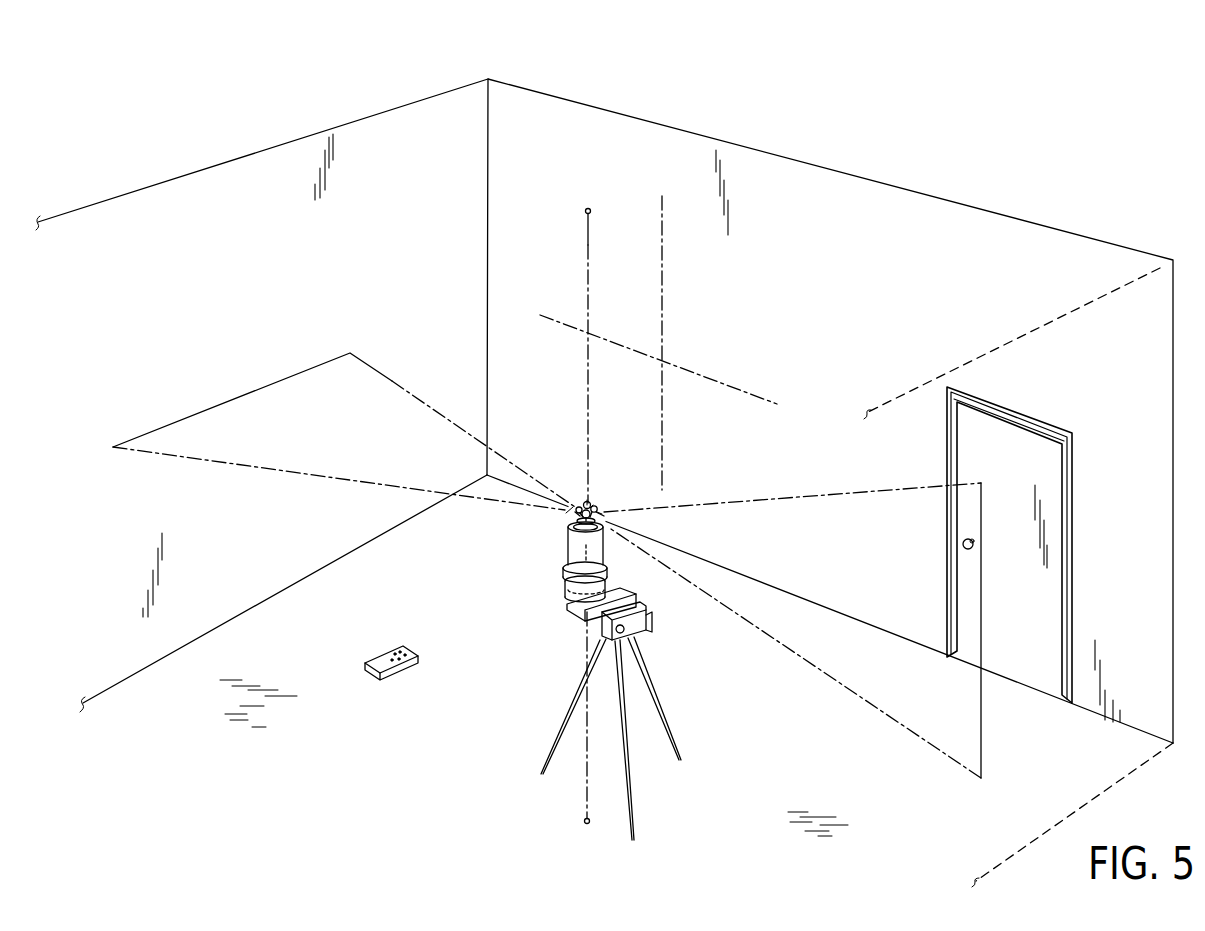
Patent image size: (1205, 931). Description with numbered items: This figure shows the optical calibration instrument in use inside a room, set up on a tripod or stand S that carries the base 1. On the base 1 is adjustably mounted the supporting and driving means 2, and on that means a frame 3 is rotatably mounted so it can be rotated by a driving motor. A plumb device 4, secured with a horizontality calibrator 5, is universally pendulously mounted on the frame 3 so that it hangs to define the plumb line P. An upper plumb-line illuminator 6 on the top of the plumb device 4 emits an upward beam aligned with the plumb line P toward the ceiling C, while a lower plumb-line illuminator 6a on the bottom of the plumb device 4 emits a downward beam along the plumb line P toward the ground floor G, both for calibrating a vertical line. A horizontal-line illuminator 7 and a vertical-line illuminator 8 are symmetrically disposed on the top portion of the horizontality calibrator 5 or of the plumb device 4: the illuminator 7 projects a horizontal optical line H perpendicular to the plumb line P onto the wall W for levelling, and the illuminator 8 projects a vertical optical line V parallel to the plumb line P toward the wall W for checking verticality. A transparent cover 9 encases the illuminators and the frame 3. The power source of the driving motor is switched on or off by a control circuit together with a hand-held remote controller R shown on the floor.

The base 1 is at (539, 553).
The supporting and driving means 2 is at (603, 592).
The frame 3 is at (568, 553).
The plumb device 4 is at (594, 562).
The horizontality calibrator 5 is at (570, 512).
The upper plumb-line illuminator 6 is at (587, 505).
The lower plumb-line illuminator 6a is at (582, 613).
The horizontal-line illuminator 7 is at (573, 507).
The vertical-line illuminator 8 is at (598, 512).
The transparent cover 9 is at (591, 508).
The wall W is at (427, 115).
The ceiling C is at (595, 206).
The plumb line P is at (591, 237).
The horizontal optical line H is at (303, 376).
The vertical optical line V is at (981, 630).
The remote controller R is at (383, 679).
The tripod or stand S is at (647, 680).
The ground floor G is at (638, 823).